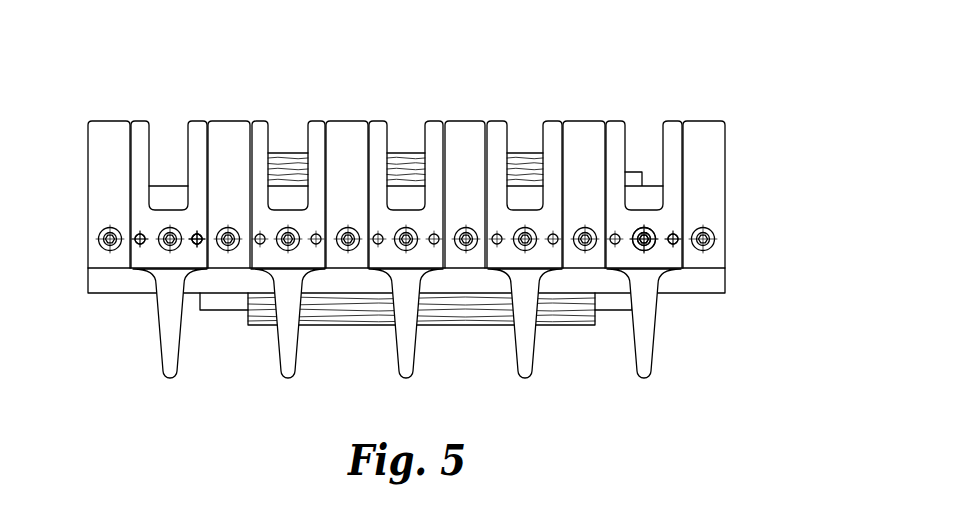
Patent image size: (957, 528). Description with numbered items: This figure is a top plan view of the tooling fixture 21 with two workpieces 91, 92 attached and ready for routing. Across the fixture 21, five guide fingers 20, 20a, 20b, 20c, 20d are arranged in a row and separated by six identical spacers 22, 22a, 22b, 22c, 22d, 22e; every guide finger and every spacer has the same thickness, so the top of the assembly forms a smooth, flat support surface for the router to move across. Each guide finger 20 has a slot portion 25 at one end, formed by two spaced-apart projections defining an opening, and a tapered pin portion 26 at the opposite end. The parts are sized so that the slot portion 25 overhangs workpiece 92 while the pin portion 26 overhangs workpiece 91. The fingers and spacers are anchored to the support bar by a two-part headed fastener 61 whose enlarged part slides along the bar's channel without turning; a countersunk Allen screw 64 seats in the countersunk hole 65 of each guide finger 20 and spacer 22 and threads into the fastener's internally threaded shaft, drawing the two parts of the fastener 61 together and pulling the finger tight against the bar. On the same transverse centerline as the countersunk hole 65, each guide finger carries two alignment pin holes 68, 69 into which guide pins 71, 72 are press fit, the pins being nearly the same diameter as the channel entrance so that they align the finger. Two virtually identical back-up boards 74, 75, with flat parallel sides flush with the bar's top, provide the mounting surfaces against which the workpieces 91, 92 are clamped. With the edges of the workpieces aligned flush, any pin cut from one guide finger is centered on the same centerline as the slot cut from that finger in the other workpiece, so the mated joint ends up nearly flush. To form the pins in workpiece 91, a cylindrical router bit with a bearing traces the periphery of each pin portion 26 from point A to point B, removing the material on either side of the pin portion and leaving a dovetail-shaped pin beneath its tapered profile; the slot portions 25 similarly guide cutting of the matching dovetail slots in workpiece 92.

The guide finger 20 is at (137, 130).
The guide finger 20a is at (317, 128).
The guide finger 20b is at (437, 128).
The guide finger 20c is at (553, 130).
The guide finger 20d is at (670, 135).
The tooling fixture 21 is at (750, 110).
The spacer 22 is at (108, 133).
The spacer 22a is at (224, 132).
The spacer 22b is at (347, 128).
The spacer 22c is at (461, 128).
The spacer 22d is at (595, 130).
The spacer 22e is at (712, 138).
The slot portion 25 is at (288, 132).
The pin portion 26 is at (296, 333).
The two-part headed fastener 61 is at (645, 265).
The countersunk Allen screw 64 is at (650, 236).
The countersunk hole 65 is at (631, 311).
The alignment pin hole 68 is at (143, 250).
The alignment pin hole 69 is at (197, 247).
The guide pin 71 is at (140, 229).
The guide pin 72 is at (192, 250).
The back-up board 74 is at (172, 196).
The back-up board 75 is at (220, 283).
The workpiece 91 is at (466, 315).
The workpiece 92 is at (524, 162).
The point A is at (243, 290).
The point B is at (325, 292).